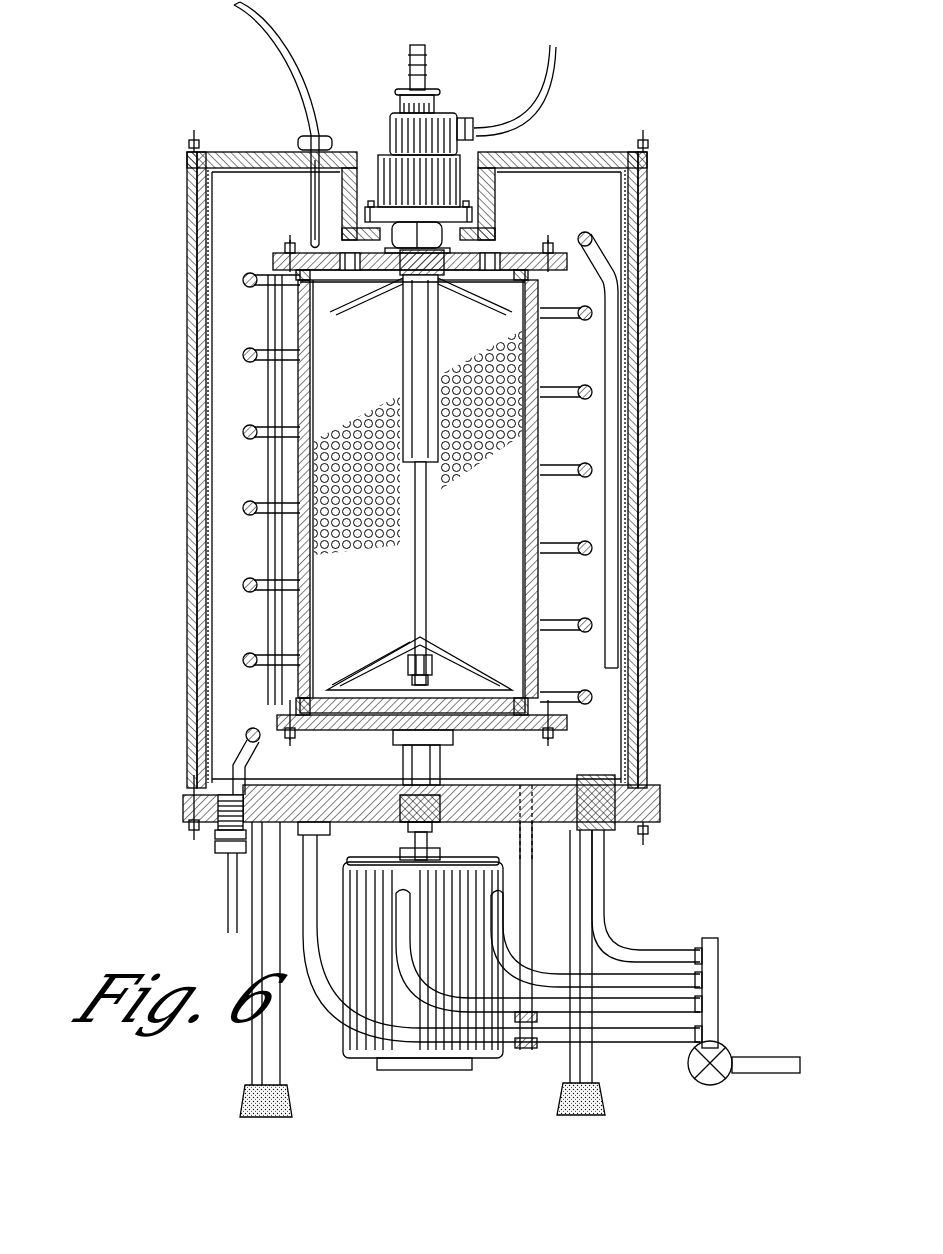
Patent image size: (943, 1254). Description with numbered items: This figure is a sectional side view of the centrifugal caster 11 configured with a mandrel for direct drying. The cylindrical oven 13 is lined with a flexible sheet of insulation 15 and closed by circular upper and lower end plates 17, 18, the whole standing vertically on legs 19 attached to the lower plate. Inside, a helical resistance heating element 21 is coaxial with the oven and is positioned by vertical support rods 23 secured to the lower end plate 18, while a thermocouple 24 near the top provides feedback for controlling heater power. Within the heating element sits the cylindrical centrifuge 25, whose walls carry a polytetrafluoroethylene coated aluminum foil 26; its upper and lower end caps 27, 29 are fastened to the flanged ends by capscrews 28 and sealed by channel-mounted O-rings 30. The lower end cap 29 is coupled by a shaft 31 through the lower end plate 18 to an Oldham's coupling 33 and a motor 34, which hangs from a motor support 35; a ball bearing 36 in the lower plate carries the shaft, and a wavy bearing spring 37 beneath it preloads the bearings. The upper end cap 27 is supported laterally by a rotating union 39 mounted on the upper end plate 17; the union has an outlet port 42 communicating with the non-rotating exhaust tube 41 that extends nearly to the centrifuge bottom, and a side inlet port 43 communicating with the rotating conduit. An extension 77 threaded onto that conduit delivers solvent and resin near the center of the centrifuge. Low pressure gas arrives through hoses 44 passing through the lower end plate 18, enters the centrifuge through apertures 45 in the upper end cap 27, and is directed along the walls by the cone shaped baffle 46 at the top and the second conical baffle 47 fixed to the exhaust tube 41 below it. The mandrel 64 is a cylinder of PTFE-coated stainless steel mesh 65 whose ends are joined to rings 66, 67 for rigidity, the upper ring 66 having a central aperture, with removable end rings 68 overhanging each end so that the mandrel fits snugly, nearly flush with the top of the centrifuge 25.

The centrifugal caster 11 is at (440, 487).
The cylindrical oven 13 is at (647, 262).
The sheet of insulation 15 is at (200, 408).
The upper end plate 17 is at (647, 158).
The lower end plate 18 is at (660, 805).
The legs 19 is at (252, 1030).
The helical resistance heating element 21 is at (620, 512).
The vertical support rods 23 is at (268, 340).
The thermocouple 24 is at (308, 172).
The centrifuge 25 is at (545, 455).
The polytetrafluoroethylene coated aluminum foil 26 is at (524, 452).
The upper end cap 27 is at (320, 242).
The capscrews 28 is at (288, 248).
The lower end cap 29 is at (490, 722).
The O-rings 30 is at (291, 252).
The shaft 31 is at (405, 745).
The Oldham's coupling 33 is at (412, 822).
The motor 34 is at (345, 1030).
The motor support 35 is at (533, 915).
The ball bearing 36 is at (450, 812).
The wavy bearing spring 37 is at (445, 822).
The rotating union 39 is at (392, 115).
The exhaust tube 41 is at (432, 665).
The outlet port 42 is at (432, 94).
The inlet port 43 is at (478, 126).
The hoses 44 is at (650, 960).
The apertures 45 is at (497, 256).
The cone shaped baffle 46 is at (492, 305).
The second conical baffle 47 is at (485, 655).
The mandrel 64 is at (520, 505).
The stainless steel mesh 65 is at (528, 540).
The upper ring 66 is at (352, 300).
The lower ring 67 is at (327, 682).
The removable end rings 68 is at (521, 264).
The extension 77 is at (440, 450).